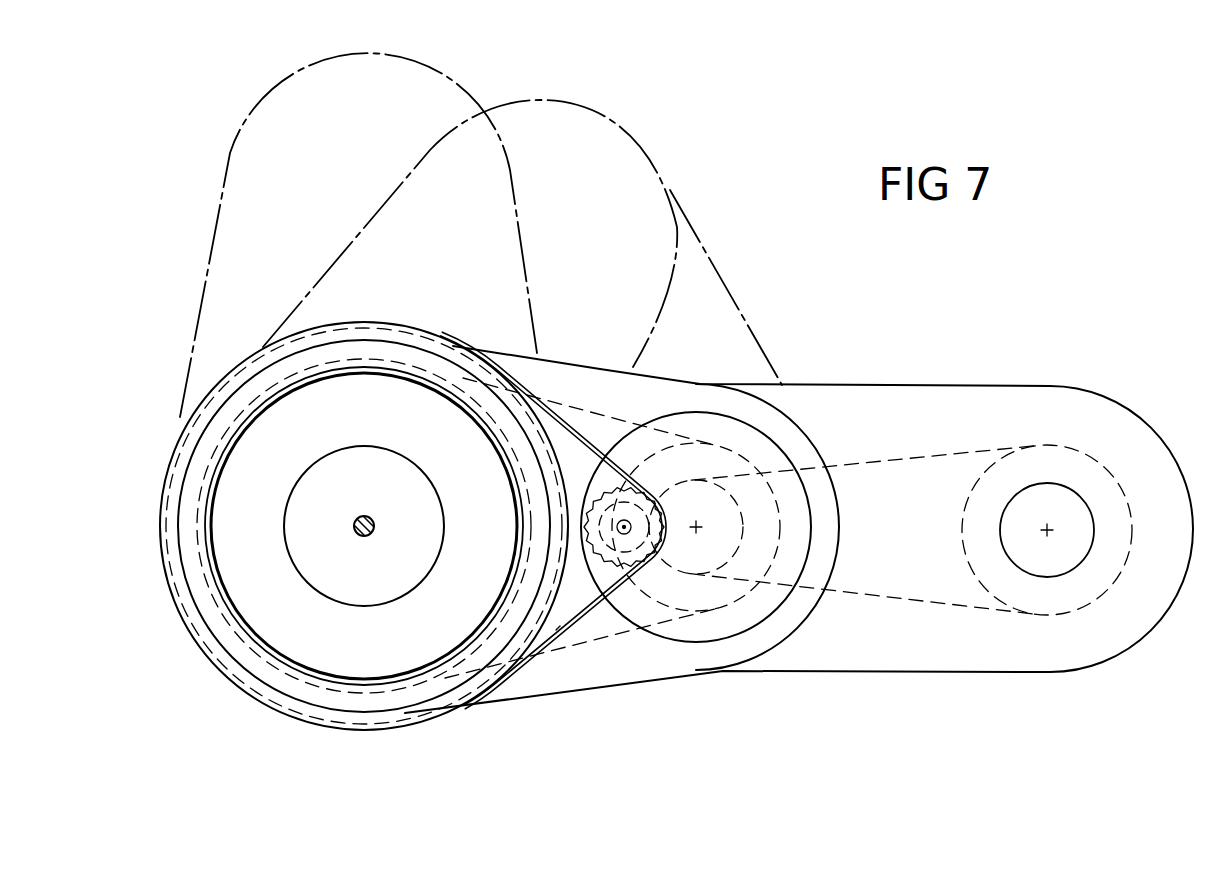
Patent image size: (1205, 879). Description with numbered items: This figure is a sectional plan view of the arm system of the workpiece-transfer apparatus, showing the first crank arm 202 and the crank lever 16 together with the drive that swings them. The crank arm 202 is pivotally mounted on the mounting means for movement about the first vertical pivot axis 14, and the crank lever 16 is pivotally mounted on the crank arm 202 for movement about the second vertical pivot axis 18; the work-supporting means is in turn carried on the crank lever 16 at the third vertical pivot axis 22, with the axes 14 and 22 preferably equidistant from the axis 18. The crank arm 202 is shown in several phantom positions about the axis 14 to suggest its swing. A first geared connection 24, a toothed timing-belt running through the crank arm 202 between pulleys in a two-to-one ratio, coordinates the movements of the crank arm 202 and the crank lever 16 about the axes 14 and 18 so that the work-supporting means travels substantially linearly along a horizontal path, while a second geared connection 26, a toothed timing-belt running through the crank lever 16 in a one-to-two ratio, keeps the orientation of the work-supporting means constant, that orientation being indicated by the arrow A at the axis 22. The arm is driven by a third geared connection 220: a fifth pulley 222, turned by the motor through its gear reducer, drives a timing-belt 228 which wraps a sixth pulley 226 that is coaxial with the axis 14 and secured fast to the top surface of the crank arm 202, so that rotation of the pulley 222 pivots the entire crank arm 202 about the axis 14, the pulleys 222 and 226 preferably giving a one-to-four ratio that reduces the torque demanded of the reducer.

The first vertical pivot axis 14 is at (372, 530).
The crank lever 16 is at (935, 385).
The second vertical pivot axis 18 is at (700, 527).
The third vertical pivot axis 22 is at (1046, 530).
The first geared connection 24 is at (640, 644).
The second geared connection 26 is at (950, 625).
The first crank arm 202 is at (420, 63).
The third geared connection 220 is at (590, 420).
The fifth pulley 222 is at (700, 479).
The sixth pulley 226 is at (556, 630).
The timing-belt 228 is at (547, 402).
The arrow A is at (1053, 546).